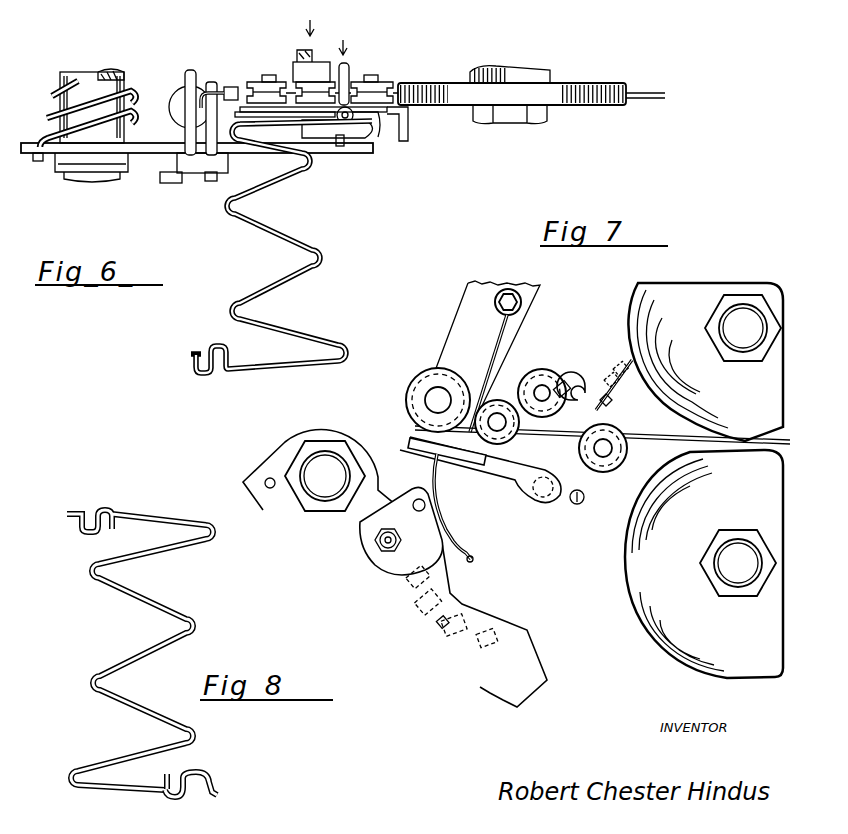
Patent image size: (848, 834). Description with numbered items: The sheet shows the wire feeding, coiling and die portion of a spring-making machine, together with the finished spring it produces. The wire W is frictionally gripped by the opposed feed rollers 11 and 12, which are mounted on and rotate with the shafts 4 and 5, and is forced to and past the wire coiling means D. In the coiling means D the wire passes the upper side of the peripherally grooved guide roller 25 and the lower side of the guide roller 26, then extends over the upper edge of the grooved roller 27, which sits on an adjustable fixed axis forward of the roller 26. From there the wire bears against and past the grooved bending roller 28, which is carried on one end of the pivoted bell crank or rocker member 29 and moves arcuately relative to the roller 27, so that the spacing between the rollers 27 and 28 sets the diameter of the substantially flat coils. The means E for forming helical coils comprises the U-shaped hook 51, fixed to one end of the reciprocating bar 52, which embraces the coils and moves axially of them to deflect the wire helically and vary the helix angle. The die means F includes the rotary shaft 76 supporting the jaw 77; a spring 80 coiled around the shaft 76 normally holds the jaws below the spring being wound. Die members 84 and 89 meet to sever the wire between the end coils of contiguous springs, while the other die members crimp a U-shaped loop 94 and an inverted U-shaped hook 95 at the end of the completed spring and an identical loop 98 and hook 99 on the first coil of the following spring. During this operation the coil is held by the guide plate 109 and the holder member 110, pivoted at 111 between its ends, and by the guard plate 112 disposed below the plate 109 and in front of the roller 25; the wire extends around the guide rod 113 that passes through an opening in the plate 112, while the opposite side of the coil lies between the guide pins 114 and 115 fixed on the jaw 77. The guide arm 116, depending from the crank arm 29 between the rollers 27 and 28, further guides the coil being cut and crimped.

In FIG. 7, the shaft 4 is at (738, 563).
In FIG. 7, the shaft 5 is at (743, 328).
In FIG. 7, the roller 11 is at (704, 564).
In FIG. 6, the roller 12 is at (572, 105).
In FIG. 7, the roller 12 is at (705, 362).
In FIG. 6, the guide roller 25 is at (377, 84).
In FIG. 7, the guide roller 25 is at (607, 470).
In FIG. 6, the guide roller 26 is at (310, 93).
In FIG. 7, the guide roller 26 is at (548, 369).
In FIG. 6, the grooved roller 27 is at (252, 82).
In FIG. 7, the grooved roller 27 is at (516, 432).
In FIG. 6, the bending roller 28 is at (230, 87).
In FIG. 7, the bending roller 28 is at (412, 385).
In FIG. 7, the bell crank or rocker member 29 is at (460, 311).
In FIG. 6, the U shaped member or hook 51 is at (173, 95).
In FIG. 7, the U shaped member or hook 51 is at (405, 437).
In FIG. 6, the bar 52 is at (300, 50).
In FIG. 7, the bar 52 is at (540, 500).
In FIG. 6, the rotary shaft 76 is at (100, 73).
In FIG. 6, the jaw 77 is at (143, 155).
In FIG. 6, the spring 80 is at (50, 93).
In FIG. 7, the die member 84 is at (437, 612).
In FIG. 7, the die member 89 is at (446, 624).
In FIG. 8, the U shaped loop 94 is at (80, 533).
In FIG. 8, the inverted U shaped hook 95 is at (108, 509).
In FIG. 6, the loop 98 is at (213, 347).
In FIG. 7, the loop 98 is at (457, 539).
In FIG. 8, the loop 98 is at (210, 784).
In FIG. 6, the hook 99 is at (193, 362).
In FIG. 7, the hook 99 is at (476, 558).
In FIG. 8, the hook 99 is at (170, 777).
In FIG. 6, the guide plate 109 is at (378, 114).
In FIG. 6, the holder member 110 is at (328, 128).
In FIG. 7, the holder member 110 is at (572, 382).
In FIG. 7, the pivot 111 is at (605, 404).
In FIG. 6, the guard plate 112 is at (410, 125).
In FIG. 6, the guide rod 113 is at (348, 62).
In FIG. 7, the guide rod 113 is at (576, 505).
In FIG. 6, the guide pin 114 is at (211, 85).
In FIG. 6, the guide pin 115 is at (187, 72).
In FIG. 7, the guide arm 116 is at (491, 362).
In FIG. 6, the wire W is at (633, 93).
In FIG. 7, the wire W is at (700, 437).
In FIG. 7, the wire coiling means D is at (502, 384).
In FIG. 7, the means for forming helical coils E is at (464, 468).
In FIG. 7, the die means F is at (475, 606).